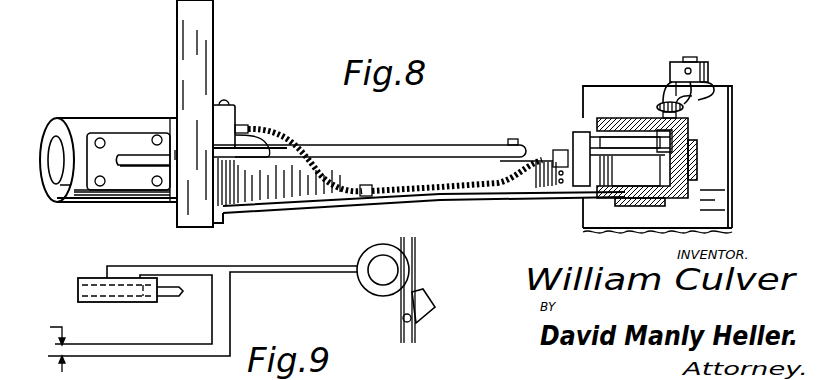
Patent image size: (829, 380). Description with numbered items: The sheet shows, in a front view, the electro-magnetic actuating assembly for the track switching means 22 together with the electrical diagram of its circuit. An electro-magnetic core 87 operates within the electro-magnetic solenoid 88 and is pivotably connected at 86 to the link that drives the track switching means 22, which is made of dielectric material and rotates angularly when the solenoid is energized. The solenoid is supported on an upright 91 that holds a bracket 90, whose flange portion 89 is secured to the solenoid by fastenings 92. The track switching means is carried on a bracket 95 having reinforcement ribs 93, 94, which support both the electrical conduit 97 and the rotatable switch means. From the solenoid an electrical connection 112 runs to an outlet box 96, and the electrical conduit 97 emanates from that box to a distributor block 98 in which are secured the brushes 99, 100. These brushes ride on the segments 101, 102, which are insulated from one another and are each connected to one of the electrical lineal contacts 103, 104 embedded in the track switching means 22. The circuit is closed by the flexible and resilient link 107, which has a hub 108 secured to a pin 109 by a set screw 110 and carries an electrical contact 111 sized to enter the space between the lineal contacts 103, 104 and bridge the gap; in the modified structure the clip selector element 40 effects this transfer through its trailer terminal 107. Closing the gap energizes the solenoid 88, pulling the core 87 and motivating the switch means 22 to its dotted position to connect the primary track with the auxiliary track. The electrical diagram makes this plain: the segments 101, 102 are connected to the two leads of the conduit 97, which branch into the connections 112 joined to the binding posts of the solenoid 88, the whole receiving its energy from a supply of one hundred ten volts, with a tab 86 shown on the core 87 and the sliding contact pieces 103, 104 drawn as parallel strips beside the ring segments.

In FIG. 8, the track switching means 22 is at (698, 162).
In FIG. 8, the clip selector element 40 is at (718, 100).
In FIG. 8, the pivot 86 is at (512, 140).
In FIG. 8, the electro-magnetic core 87 is at (427, 138).
In FIG. 8, the electro-magnetic solenoid 88 is at (72, 118).
In FIG. 9, the electro-magnetic solenoid 88 is at (88, 278).
In FIG. 8, the flange portion 89 is at (100, 203).
In FIG. 8, the bracket 90 is at (170, 130).
In FIG. 8, the upright 91 is at (203, 11).
In FIG. 8, the fastenings 92 is at (154, 136).
In FIG. 8, the reinforcement rib 93 is at (270, 177).
In FIG. 8, the reinforcement rib 94 is at (482, 193).
In FIG. 8, the bracket 95 is at (212, 188).
In FIG. 8, the outlet box 96 is at (224, 117).
In FIG. 8, the electrical conduit 97 is at (312, 182).
In FIG. 9, the electrical conduit 97 is at (230, 322).
In FIG. 8, the distributor block 98 is at (583, 134).
In FIG. 8, the brush 99 is at (578, 132).
In FIG. 8, the brush 100 is at (593, 172).
In FIG. 8, the segment 101 is at (692, 133).
In FIG. 9, the segment 101 is at (360, 290).
In FIG. 8, the segment 102 is at (698, 152).
In FIG. 9, the segment 102 is at (380, 287).
In FIG. 8, the electrical lineal contact 103 is at (683, 113).
In FIG. 9, the electrical lineal contact 103 is at (415, 250).
In FIG. 8, the electrical lineal contact 104 is at (660, 116).
In FIG. 9, the electrical lineal contact 104 is at (415, 237).
In FIG. 8, the flexible and resilient link 107 is at (680, 80).
In FIG. 9, the flexible and resilient link 107 is at (427, 297).
In FIG. 8, the hub 108 is at (708, 70).
In FIG. 8, the pin 109 is at (698, 62).
In FIG. 8, the set screw 110 is at (695, 57).
In FIG. 8, the electrical contact 111 is at (663, 102).
In FIG. 9, the electrical contact 111 is at (420, 320).
In FIG. 9, the electrical connection 112 is at (203, 275).